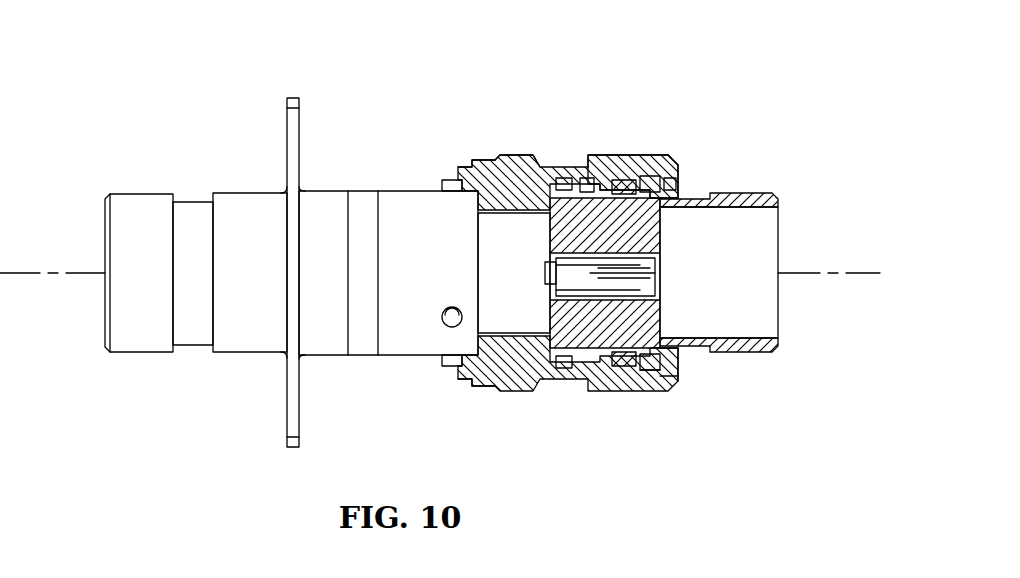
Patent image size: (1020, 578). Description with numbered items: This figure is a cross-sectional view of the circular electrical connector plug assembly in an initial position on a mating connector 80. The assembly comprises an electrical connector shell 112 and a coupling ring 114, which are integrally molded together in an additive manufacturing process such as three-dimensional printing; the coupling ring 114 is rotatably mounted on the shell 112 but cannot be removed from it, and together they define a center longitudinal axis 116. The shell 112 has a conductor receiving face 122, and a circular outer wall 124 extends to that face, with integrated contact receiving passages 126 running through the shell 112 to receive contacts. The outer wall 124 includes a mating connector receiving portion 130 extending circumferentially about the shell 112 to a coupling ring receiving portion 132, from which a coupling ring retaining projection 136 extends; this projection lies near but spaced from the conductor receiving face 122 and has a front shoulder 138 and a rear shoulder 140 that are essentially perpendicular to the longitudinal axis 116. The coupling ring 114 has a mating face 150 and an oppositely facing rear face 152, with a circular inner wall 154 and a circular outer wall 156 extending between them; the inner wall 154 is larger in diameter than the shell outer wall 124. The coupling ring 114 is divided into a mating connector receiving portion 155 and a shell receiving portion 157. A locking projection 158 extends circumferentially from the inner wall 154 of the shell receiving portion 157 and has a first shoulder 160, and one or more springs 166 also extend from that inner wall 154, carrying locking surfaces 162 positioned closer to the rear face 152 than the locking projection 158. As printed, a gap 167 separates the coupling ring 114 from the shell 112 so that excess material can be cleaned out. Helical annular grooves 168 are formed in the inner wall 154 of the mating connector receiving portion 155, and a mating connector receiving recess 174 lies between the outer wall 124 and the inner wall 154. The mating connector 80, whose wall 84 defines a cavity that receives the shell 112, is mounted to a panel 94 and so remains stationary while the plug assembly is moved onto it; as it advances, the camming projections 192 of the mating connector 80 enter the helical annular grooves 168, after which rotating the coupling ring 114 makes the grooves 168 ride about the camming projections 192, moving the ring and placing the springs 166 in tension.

The mating connector 80 is at (370, 96).
The wall 84 is at (388, 190).
The panel 94 is at (288, 422).
The electrical connector shell 112 is at (495, 385).
The coupling ring 114 is at (746, 56).
The center longitudinal axis 116 is at (860, 272).
The conductor receiving face 122 is at (780, 213).
The circular outer wall 124 is at (545, 350).
The contact receiving passages 126 is at (677, 350).
The mating connector receiving portion 130 is at (505, 180).
The coupling ring receiving portion 132 is at (680, 195).
The coupling ring retaining projection 136 is at (620, 184).
The front shoulder 138 is at (590, 355).
The rear shoulder 140 is at (634, 364).
The mating face 150 is at (457, 370).
The rear face 152 is at (675, 377).
The circular inner wall 154 is at (498, 354).
The mating connector receiving portion 155 is at (488, 163).
The circular outer wall 156 is at (647, 372).
The shell receiving portion 157 is at (672, 160).
The locking projection 158 is at (594, 184).
The first shoulder 160 is at (612, 184).
The locking surfaces 162 is at (640, 190).
The springs 166 is at (676, 178).
The gap 167 is at (678, 352).
The helical annular grooves 168 is at (455, 180).
The mating connector receiving recess 174 is at (490, 165).
The camming projections 192 is at (441, 327).